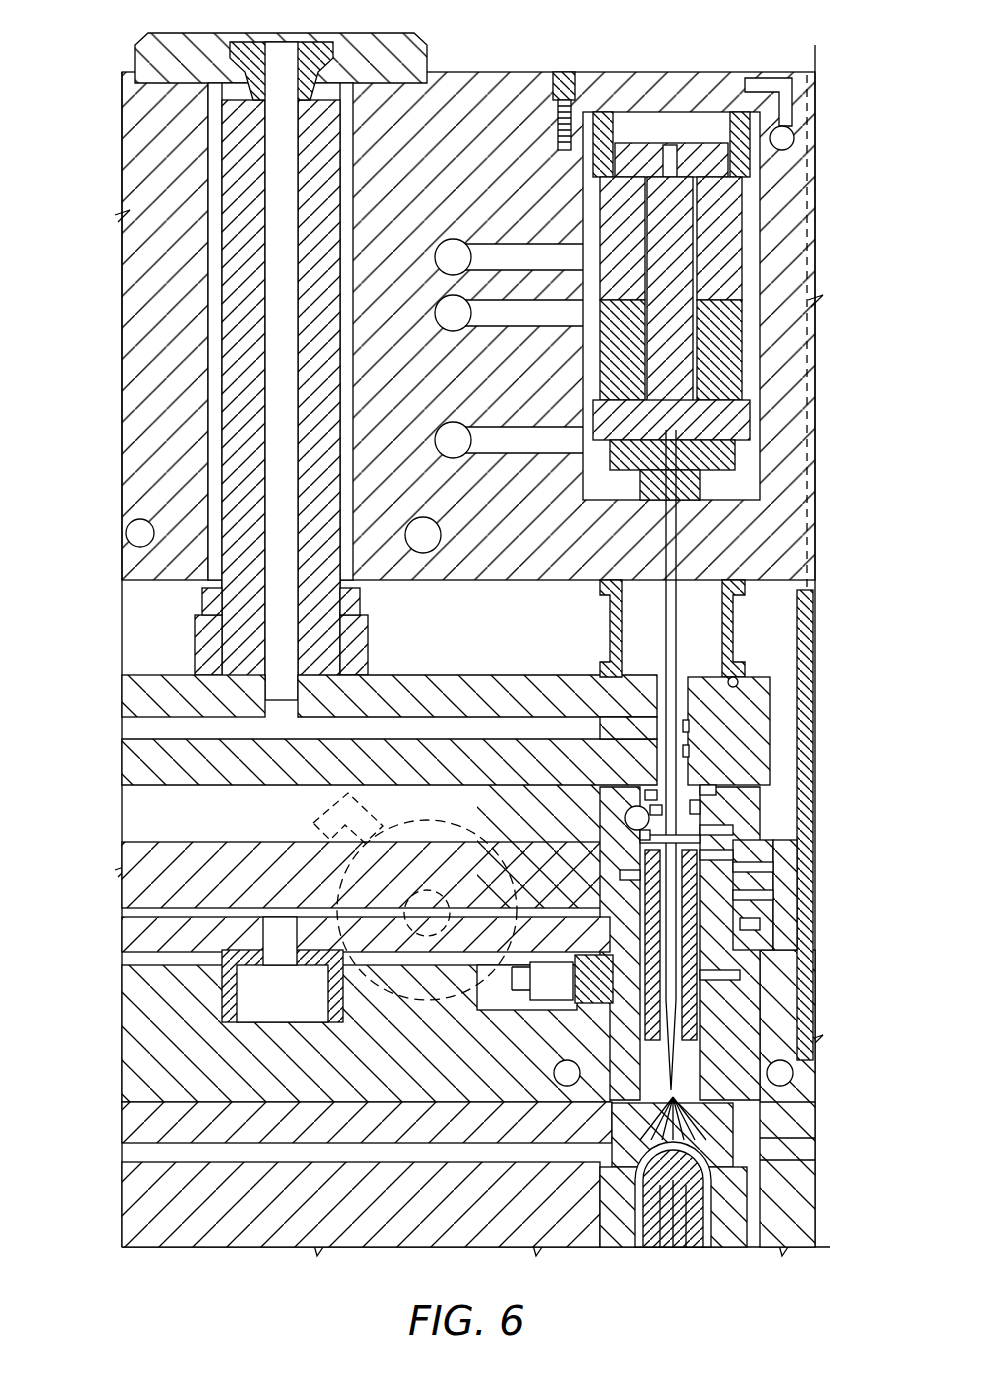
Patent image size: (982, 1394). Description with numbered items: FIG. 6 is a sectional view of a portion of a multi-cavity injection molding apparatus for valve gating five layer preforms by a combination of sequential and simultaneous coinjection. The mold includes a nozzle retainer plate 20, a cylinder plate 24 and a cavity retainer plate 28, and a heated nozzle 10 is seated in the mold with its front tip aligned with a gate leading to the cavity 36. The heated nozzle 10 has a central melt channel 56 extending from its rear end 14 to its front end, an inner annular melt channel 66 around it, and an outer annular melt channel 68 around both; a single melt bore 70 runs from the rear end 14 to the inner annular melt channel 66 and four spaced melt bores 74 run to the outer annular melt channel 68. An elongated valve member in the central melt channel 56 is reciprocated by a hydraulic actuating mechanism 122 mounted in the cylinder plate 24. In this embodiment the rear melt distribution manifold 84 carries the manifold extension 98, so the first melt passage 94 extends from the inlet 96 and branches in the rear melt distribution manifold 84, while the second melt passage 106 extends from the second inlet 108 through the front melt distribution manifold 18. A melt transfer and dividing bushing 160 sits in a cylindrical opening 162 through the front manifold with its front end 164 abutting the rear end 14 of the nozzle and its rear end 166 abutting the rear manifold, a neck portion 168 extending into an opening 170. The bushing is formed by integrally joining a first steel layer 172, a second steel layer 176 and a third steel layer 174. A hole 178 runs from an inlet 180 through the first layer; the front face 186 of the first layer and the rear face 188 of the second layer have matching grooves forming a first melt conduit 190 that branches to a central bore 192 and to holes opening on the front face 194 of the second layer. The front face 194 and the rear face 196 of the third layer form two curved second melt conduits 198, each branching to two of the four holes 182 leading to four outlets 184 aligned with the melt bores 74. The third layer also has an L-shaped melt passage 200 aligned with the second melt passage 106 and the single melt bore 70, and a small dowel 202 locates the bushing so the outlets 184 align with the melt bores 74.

The heated nozzle 10 is at (780, 1020).
The rear end 14 is at (775, 955).
The front melt distribution manifold 18 is at (150, 885).
The nozzle retainer plate 20 is at (145, 1021).
The cylinder plate 24 is at (512, 80).
The cavity retainer plate 28 is at (150, 1207).
The cavity 36 is at (640, 1240).
The central melt channel 56 is at (800, 1053).
The inner annular melt channel 66 is at (770, 1090).
The outer annular melt channel 68 is at (740, 1030).
The single melt bore 70 is at (640, 1010).
The spaced melt bores 74 is at (735, 1005).
The rear melt distribution manifold 84 is at (150, 762).
The first melt passage 94 is at (275, 700).
The inlet 96 is at (287, 45).
The manifold extension 98 is at (245, 318).
The second melt passage 106 is at (600, 1000).
The second inlet 108 is at (420, 865).
The actuating mechanism 122 is at (740, 239).
The melt transfer and dividing bushing 160 is at (735, 890).
The cylindrical opening 162 is at (710, 912).
The front end 164 is at (760, 992).
The rear end 166 is at (700, 790).
The neck portion 168 is at (693, 710).
The opening 170 is at (688, 728).
The first steel layer 172 is at (650, 812).
The third steel layer 174 is at (735, 945).
The second steel layer 176 is at (740, 855).
The hole 178 is at (645, 790).
The inlet 180 is at (660, 815).
The holes 182 is at (760, 925).
The outlets 184 is at (735, 975).
The front face 186 is at (740, 832).
The rear face 188 is at (745, 808).
The first melt conduit 190 is at (607, 663).
The central bore 192 is at (700, 840).
The front face 194 is at (748, 896).
The rear face 196 is at (745, 868).
The curved second melt conduits 198 is at (645, 840).
The L-shaped melt passage 200 is at (635, 880).
The small dowel 202 is at (660, 790).